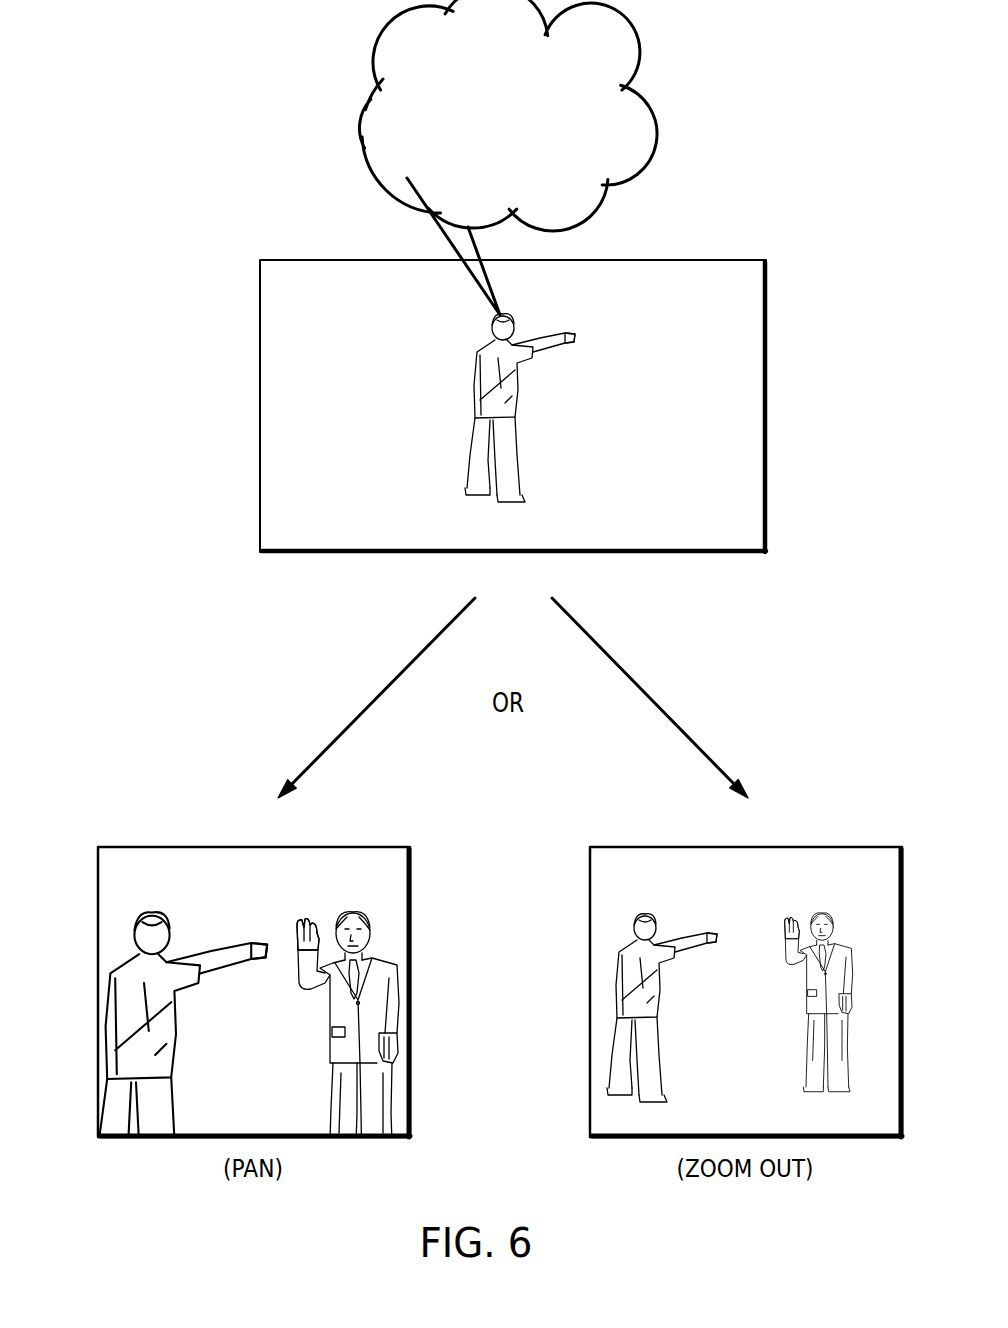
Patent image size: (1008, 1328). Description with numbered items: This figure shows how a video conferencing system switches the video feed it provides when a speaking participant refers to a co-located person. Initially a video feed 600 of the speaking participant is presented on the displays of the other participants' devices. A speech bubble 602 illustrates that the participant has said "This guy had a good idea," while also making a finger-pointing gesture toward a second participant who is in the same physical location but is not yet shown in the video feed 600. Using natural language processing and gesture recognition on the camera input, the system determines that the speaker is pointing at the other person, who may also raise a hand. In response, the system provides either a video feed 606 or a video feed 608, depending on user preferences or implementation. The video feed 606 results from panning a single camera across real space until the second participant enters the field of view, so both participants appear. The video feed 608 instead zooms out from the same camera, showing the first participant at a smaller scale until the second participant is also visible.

The video feed 600 is at (260, 403).
The speech bubble 602 is at (382, 34).
The video feed 606 is at (98, 992).
The video feed 608 is at (590, 992).